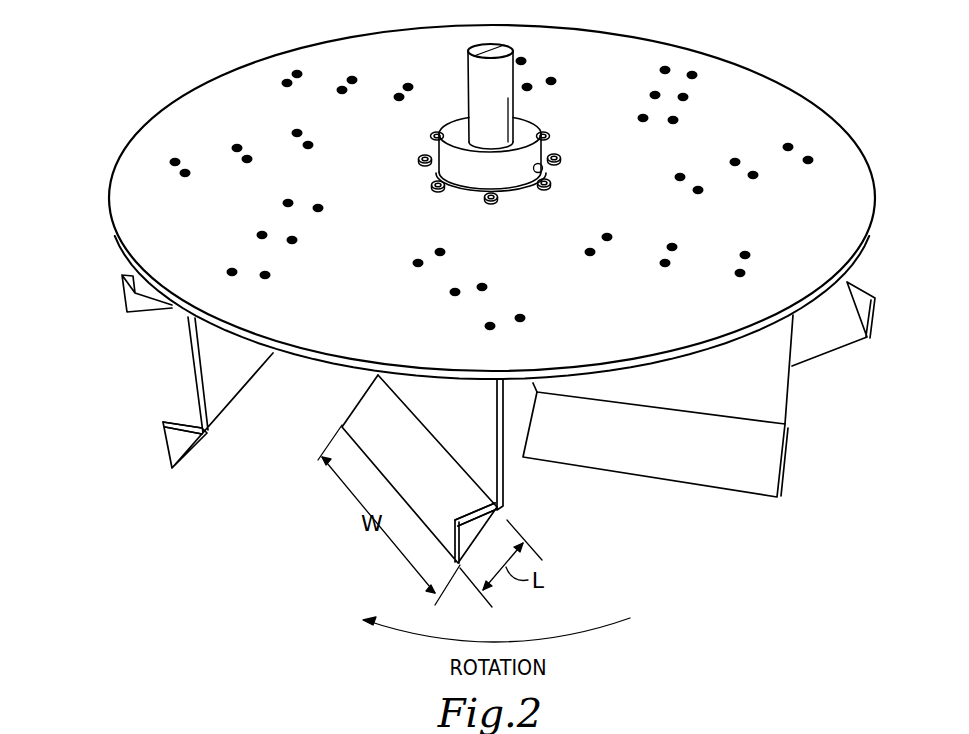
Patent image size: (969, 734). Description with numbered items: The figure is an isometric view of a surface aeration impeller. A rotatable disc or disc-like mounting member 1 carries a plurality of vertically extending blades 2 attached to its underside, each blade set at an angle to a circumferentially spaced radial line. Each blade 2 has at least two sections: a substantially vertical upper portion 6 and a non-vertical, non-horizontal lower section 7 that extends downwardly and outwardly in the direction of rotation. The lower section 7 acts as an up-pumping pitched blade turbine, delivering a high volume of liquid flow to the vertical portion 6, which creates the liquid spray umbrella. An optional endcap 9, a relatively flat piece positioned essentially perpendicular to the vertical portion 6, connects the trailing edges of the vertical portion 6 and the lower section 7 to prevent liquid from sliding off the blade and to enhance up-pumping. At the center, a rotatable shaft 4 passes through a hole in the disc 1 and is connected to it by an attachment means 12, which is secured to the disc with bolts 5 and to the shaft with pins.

The rotatable disc or disc-like mounting member 1 is at (513, 262).
The blades 2 is at (484, 400).
The rotatable shaft 4 is at (493, 72).
The bolts 5 is at (418, 159).
The vertical portion 6 is at (686, 394).
The lower section 7 is at (624, 449).
The endcap 9 is at (172, 437).
The attachment means 12 is at (477, 172).